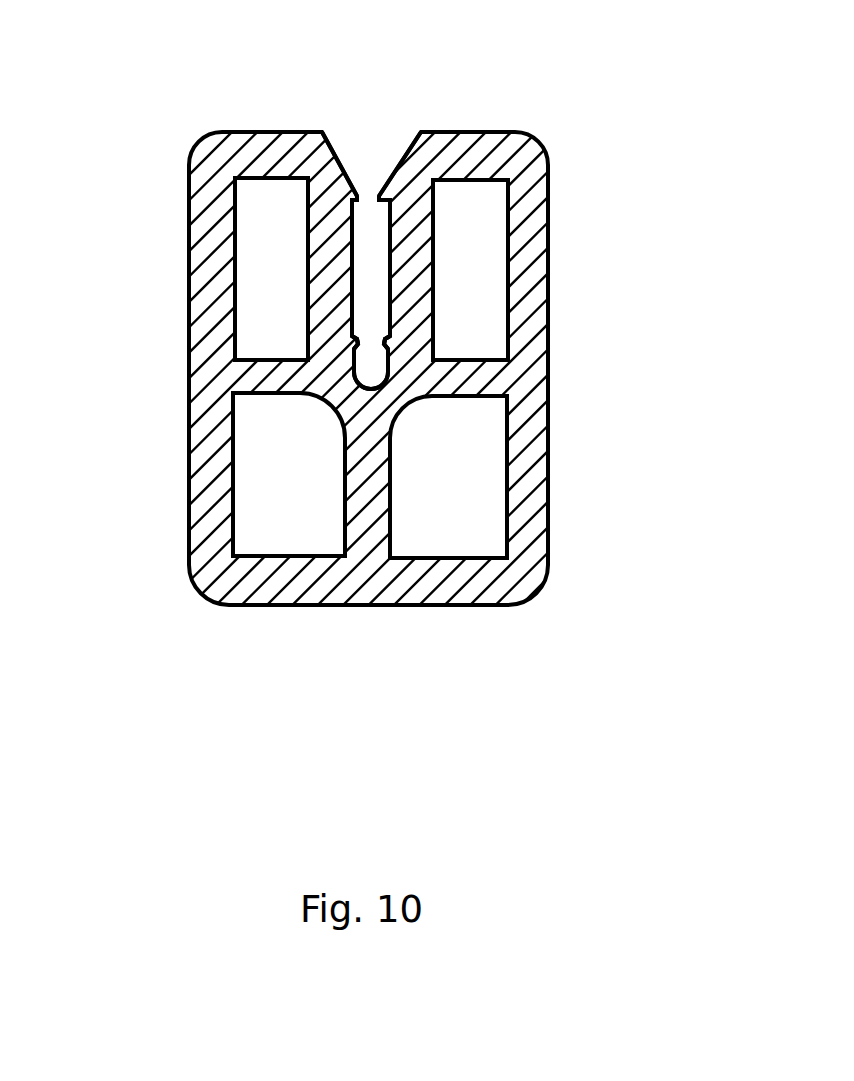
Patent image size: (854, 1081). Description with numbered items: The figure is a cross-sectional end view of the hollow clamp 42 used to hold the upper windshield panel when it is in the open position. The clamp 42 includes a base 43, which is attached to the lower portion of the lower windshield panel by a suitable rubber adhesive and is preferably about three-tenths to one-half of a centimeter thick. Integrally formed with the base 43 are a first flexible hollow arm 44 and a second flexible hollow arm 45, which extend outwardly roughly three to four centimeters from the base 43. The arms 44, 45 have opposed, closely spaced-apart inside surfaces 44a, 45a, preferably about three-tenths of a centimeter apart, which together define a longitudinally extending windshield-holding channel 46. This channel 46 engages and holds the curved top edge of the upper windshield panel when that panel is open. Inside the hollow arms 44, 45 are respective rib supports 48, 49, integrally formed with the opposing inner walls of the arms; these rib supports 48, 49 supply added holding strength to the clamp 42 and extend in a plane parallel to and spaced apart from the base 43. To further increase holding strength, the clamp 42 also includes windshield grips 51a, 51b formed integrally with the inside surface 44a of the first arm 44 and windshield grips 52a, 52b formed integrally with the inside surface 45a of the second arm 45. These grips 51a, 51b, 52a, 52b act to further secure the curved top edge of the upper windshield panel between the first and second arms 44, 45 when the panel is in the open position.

The clamp 42 is at (538, 148).
The base 43 is at (338, 606).
The first flexible hollow arm 44 is at (189, 388).
The inside surface of first arm 44a is at (365, 278).
The second flexible hollow arm 45 is at (548, 260).
The inside surface of second arm 45a is at (382, 262).
The windshield-holding channel 46 is at (372, 258).
The rib support 48 is at (265, 395).
The rib support 49 is at (468, 396).
The windshield grip 51a is at (326, 138).
The windshield grip 51b is at (362, 330).
The windshield grip 52a is at (382, 197).
The windshield grip 52b is at (392, 332).